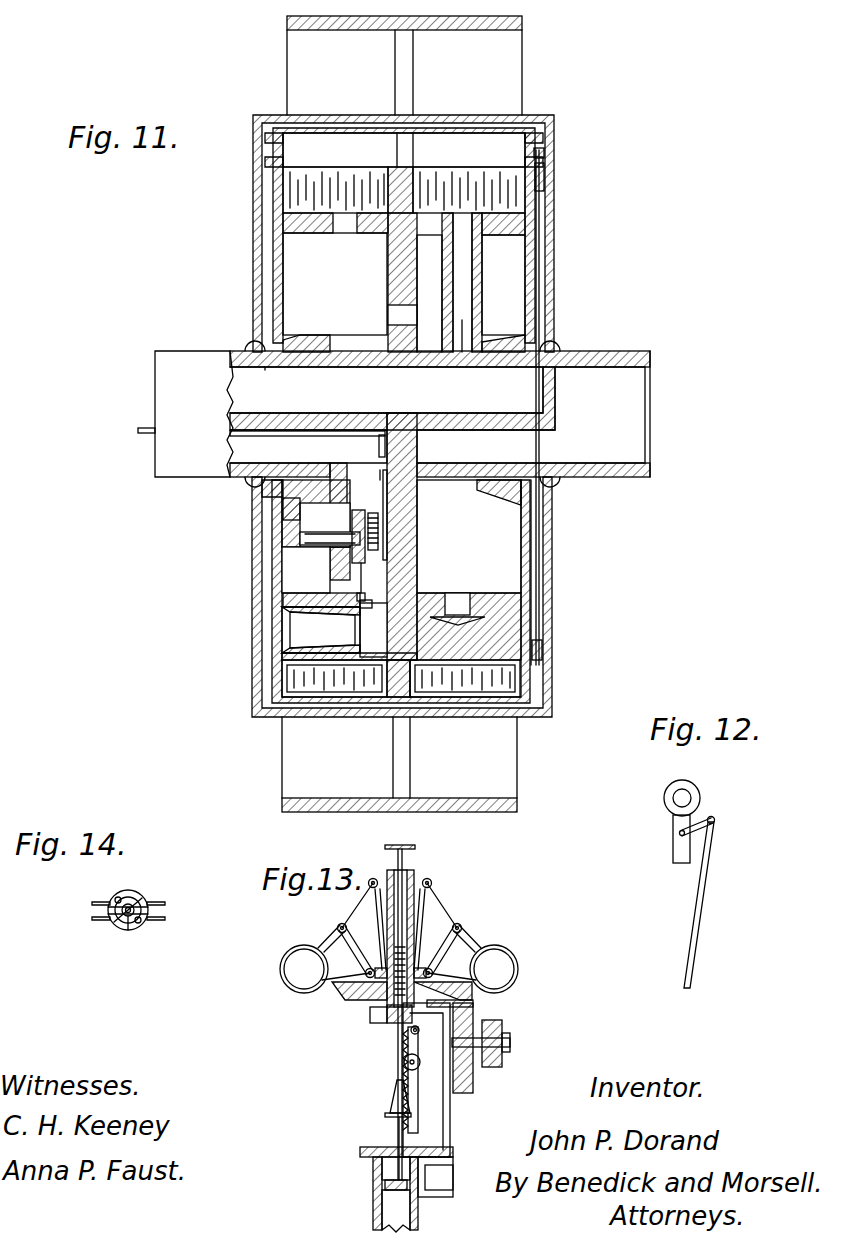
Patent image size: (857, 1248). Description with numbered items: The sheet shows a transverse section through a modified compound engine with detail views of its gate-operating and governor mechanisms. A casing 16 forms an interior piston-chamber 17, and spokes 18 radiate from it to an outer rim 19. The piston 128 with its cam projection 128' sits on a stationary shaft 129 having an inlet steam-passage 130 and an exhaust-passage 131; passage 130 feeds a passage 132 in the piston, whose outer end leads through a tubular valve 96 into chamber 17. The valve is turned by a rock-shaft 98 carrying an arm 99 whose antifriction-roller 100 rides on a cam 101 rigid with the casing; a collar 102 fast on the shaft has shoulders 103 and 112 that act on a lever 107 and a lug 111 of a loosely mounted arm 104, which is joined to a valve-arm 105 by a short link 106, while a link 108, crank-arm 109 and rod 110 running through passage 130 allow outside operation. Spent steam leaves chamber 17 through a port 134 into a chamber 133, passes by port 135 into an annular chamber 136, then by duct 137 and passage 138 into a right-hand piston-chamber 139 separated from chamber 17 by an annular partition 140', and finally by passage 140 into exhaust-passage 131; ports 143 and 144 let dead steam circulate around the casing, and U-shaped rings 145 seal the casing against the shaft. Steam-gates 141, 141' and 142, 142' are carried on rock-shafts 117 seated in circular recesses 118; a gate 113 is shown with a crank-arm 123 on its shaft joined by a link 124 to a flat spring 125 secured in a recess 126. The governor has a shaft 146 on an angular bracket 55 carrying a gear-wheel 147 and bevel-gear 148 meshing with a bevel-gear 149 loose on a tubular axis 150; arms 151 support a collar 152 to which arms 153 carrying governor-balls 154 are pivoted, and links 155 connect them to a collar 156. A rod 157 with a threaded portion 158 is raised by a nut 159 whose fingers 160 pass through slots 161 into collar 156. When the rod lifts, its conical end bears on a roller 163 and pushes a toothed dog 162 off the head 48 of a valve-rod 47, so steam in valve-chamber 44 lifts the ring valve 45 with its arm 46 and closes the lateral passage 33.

In FIG. 11, the casing 16 is at (534, 620).
In FIG. 11, the piston-chamber 17 is at (278, 196).
In FIG. 11, the spokes 18 is at (413, 70).
In FIG. 11, the outer rim 19 is at (516, 30).
In FIG. 13, the lateral passage 33 is at (445, 1178).
In FIG. 13, the valve-chamber 44 is at (405, 1218).
In FIG. 13, the valve 45 is at (373, 1200).
In FIG. 13, the arm 46 is at (382, 1178).
In FIG. 13, the valve-rod 47 is at (396, 1132).
In FIG. 13, the beveled head 48 is at (390, 1115).
In FIG. 13, the angular bracket 55 is at (447, 1125).
In FIG. 11, the tubular valve 96 is at (290, 640).
In FIG. 11, the rock-shaft 98 is at (282, 560).
In FIG. 11, the arm 99 is at (300, 537).
In FIG. 11, the antifriction-roller 100 is at (283, 505).
In FIG. 11, the cam 101 is at (292, 335).
In FIG. 11, the collar 102 is at (366, 530).
In FIG. 11, the shoulder 103 is at (352, 558).
In FIG. 11, the arm 104 is at (372, 570).
In FIG. 11, the valve-arm 105 is at (376, 630).
In FIG. 11, the link 106 is at (376, 610).
In FIG. 11, the lever 107 is at (359, 582).
In FIG. 11, the link 108 is at (418, 497).
In FIG. 11, the crank-arm 109 is at (379, 447).
In FIG. 11, the rod 110 is at (307, 443).
In FIG. 11, the lug 111 is at (371, 515).
In FIG. 11, the second shoulder 112 is at (366, 480).
In FIG. 12, the steam-gate 113 is at (675, 850).
In FIG. 11, the rock-shafts 117 is at (548, 148).
In FIG. 12, the circular recesses 118 is at (672, 798).
In FIG. 11, the crank-arm 123 is at (545, 172).
In FIG. 12, the crank-arm 123 is at (680, 828).
In FIG. 11, the link 124 is at (544, 192).
In FIG. 12, the link 124 is at (713, 817).
In FIG. 11, the flat spring 125 is at (541, 580).
In FIG. 12, the flat spring 125 is at (704, 865).
In FIG. 11, the recess 126 is at (540, 532).
In FIG. 11, the piston 128 is at (503, 282).
In FIG. 11, the cam projection 128' is at (499, 708).
In FIG. 11, the stationary shaft 129 is at (637, 478).
In FIG. 11, the inlet steam-passage 130 is at (232, 447).
In FIG. 11, the exhaust-passage 131 is at (236, 388).
In FIG. 11, the passage 132 is at (405, 458).
In FIG. 11, the chamber 133 is at (335, 284).
In FIG. 11, the port 134 is at (318, 233).
In FIG. 11, the port 135 is at (388, 313).
In FIG. 11, the annular chamber 136 is at (468, 403).
In FIG. 11, the duct 137 is at (460, 605).
In FIG. 11, the passage 138 is at (456, 597).
In FIG. 11, the right-hand piston-chamber 139 is at (466, 172).
In FIG. 11, the passage 140 is at (481, 356).
In FIG. 11, the annular partition 140' is at (382, 706).
In FIG. 11, the steam-gate 141 is at (335, 150).
In FIG. 11, the steam-gate 141' is at (334, 702).
In FIG. 11, the steam-gate 142 is at (469, 152).
In FIG. 11, the steam-gate 142' is at (441, 704).
In FIG. 11, the port 143 is at (524, 365).
In FIG. 11, the port 144 is at (268, 368).
In FIG. 11, the rings 145 is at (248, 482).
In FIG. 13, the short shaft 146 is at (510, 1040).
In FIG. 13, the gear-wheel 147 is at (500, 1020).
In FIG. 13, the bevel-gear 148 is at (473, 1082).
In FIG. 13, the bevel-gear 149 is at (350, 997).
In FIG. 14, the tubular axis 150 is at (136, 895).
In FIG. 13, the tubular axis 150 is at (417, 878).
In FIG. 13, the arms 151 is at (367, 910).
In FIG. 13, the collar 152 is at (385, 847).
In FIG. 13, the governor-ball arms 153 is at (322, 942).
In FIG. 13, the governor-balls 154 is at (285, 962).
In FIG. 13, the links 155 is at (330, 976).
In FIG. 14, the collar 156 is at (118, 920).
In FIG. 13, the collar 156 is at (461, 924).
In FIG. 14, the rod 157 is at (126, 930).
In FIG. 13, the rod 157 is at (405, 855).
In FIG. 13, the threaded portion 158 is at (385, 1010).
In FIG. 14, the nut 159 is at (134, 918).
In FIG. 13, the nut 159 is at (412, 990).
In FIG. 14, the fingers 160 is at (92, 911).
In FIG. 13, the fingers 160 is at (401, 970).
In FIG. 14, the elongated slots 161 is at (118, 896).
In FIG. 13, the elongated slots 161 is at (399, 945).
In FIG. 13, the toothed dog 162 is at (420, 1095).
In FIG. 13, the roller 163 is at (404, 1065).